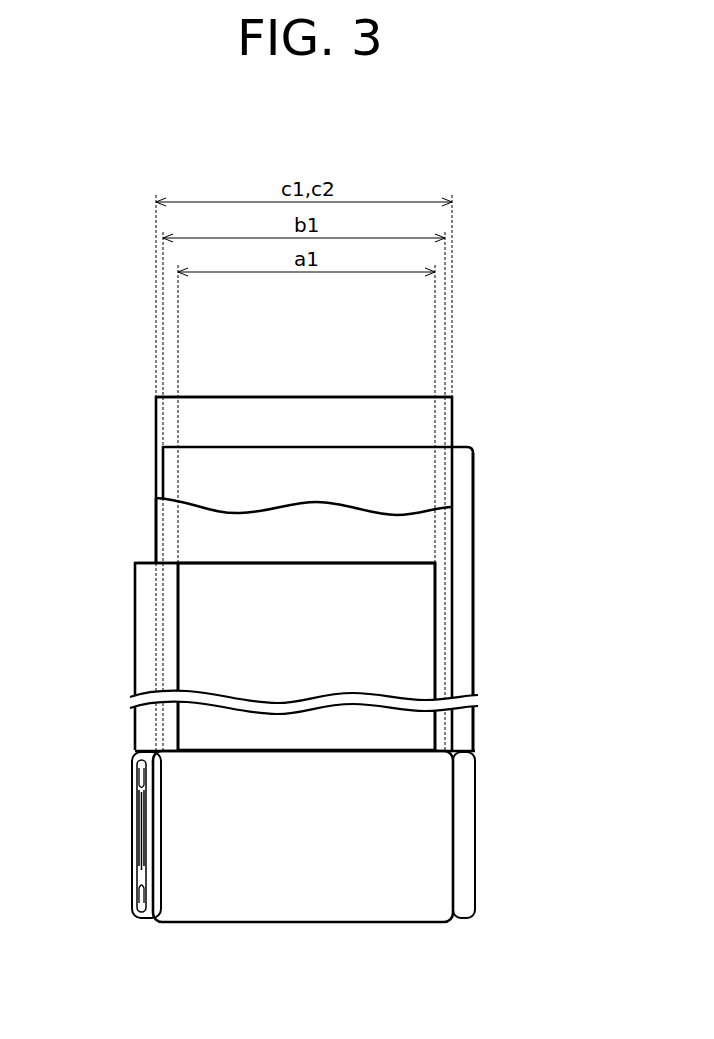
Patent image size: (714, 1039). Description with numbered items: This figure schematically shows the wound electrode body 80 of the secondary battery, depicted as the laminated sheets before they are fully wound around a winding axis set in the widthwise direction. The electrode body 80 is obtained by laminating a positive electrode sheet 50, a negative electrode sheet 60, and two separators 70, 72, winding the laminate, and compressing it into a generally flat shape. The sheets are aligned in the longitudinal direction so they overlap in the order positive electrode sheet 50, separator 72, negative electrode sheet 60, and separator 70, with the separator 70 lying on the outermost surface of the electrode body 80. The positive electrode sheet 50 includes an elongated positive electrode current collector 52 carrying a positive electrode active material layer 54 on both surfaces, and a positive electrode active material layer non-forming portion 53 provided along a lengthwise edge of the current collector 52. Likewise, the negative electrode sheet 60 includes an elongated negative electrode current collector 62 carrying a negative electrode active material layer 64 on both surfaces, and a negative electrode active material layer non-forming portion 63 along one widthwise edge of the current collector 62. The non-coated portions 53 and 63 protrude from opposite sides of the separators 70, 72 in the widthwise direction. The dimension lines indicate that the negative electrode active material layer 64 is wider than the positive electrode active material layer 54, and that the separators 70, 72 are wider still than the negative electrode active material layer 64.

The positive electrode sheet 50 is at (134, 612).
The positive electrode current collector 52 is at (295, 560).
The positive electrode active material layer non-forming portion 53 is at (150, 670).
The positive electrode active material layer 54 is at (206, 651).
The negative electrode sheet 60 is at (477, 457).
The negative electrode current collector 62 is at (293, 445).
The negative electrode active material layer non-forming portion 63 is at (458, 497).
The negative electrode active material layer 64 is at (387, 461).
The separator 70 is at (172, 420).
The separator 72 is at (172, 540).
The electrode body 80 is at (337, 896).